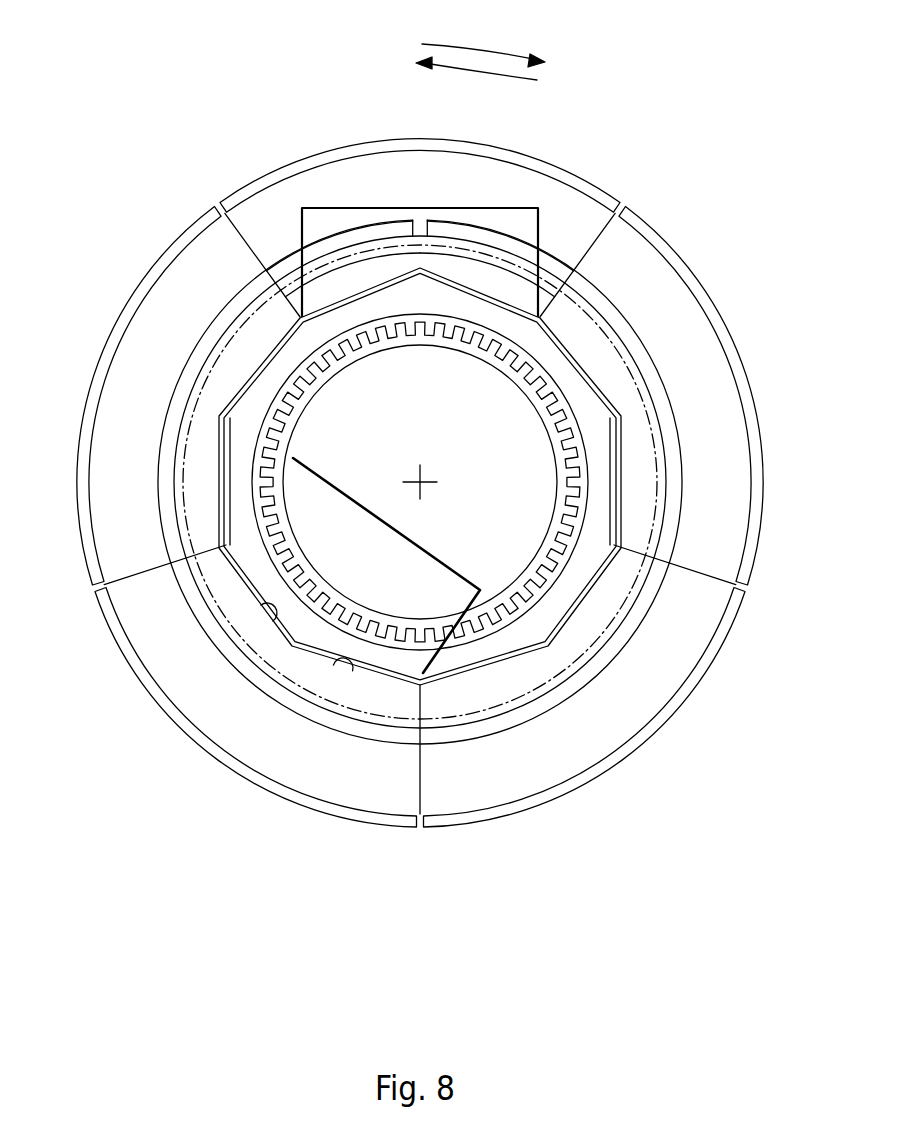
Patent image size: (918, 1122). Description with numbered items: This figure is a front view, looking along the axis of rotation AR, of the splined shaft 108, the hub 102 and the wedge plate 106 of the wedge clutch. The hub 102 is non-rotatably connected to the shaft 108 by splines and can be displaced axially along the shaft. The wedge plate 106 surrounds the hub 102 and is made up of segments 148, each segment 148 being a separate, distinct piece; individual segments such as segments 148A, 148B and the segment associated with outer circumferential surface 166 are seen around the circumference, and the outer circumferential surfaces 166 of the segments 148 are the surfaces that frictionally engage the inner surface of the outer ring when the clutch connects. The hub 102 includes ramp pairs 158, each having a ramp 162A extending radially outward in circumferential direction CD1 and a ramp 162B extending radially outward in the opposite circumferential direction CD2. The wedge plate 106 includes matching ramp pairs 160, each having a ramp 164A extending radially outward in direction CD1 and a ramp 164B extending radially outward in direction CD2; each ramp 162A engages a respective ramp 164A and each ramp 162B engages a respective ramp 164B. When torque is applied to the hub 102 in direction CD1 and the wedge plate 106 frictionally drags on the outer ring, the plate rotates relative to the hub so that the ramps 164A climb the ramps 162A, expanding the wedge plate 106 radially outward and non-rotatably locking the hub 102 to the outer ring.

The hub 102 is at (603, 447).
The wedge plate 106 is at (249, 98).
The splined shaft 108 is at (372, 350).
The segments 148 is at (363, 133).
The ring segment 148A is at (683, 330).
The ring segment 148B is at (613, 733).
The ramp pairs 158 is at (400, 530).
The ramp pairs 160 is at (421, 208).
The ramp 162A is at (347, 660).
The ramp 162B is at (258, 598).
The ramp 164A is at (353, 307).
The ramp 164B is at (483, 270).
The outer circumferential surfaces 166 is at (121, 314).
The axis of rotation AR is at (422, 478).
The circumferential direction CD1 is at (475, 44).
The circumferential direction CD2 is at (520, 78).